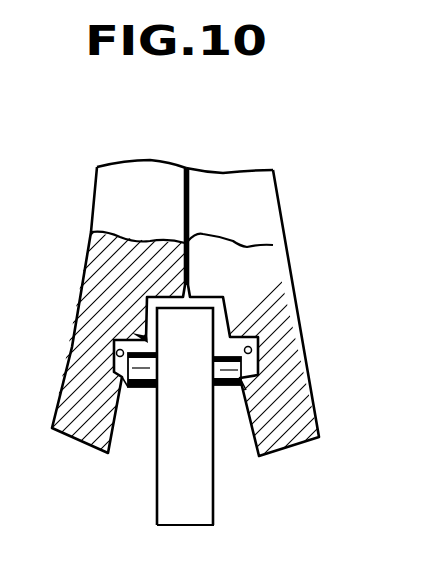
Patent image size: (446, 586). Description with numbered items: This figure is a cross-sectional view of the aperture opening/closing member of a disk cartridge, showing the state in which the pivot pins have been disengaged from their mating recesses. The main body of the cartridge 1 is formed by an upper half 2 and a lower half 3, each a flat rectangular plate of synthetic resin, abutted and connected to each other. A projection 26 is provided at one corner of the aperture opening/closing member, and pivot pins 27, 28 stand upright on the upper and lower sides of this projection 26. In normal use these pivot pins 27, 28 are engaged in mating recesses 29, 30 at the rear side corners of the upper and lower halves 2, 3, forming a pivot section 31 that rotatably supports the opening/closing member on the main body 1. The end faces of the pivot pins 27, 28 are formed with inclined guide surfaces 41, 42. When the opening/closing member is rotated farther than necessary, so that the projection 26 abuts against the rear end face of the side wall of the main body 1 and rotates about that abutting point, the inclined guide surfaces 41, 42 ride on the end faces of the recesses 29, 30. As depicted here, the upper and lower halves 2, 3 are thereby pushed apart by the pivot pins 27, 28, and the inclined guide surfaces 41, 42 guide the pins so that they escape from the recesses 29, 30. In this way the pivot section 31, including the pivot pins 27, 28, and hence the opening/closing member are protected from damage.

The main body of the cartridge 1 is at (225, 182).
The upper half 2 is at (273, 277).
The lower half 3 is at (97, 273).
The projection 26 is at (202, 503).
The pivot pin 27 is at (243, 372).
The pivot pin 28 is at (128, 377).
The mating recess 29 is at (253, 348).
The mating recess 30 is at (117, 353).
The pivot section 31 is at (143, 340).
The inclined guide surface 41 is at (246, 389).
The inclined guide surface 42 is at (128, 387).